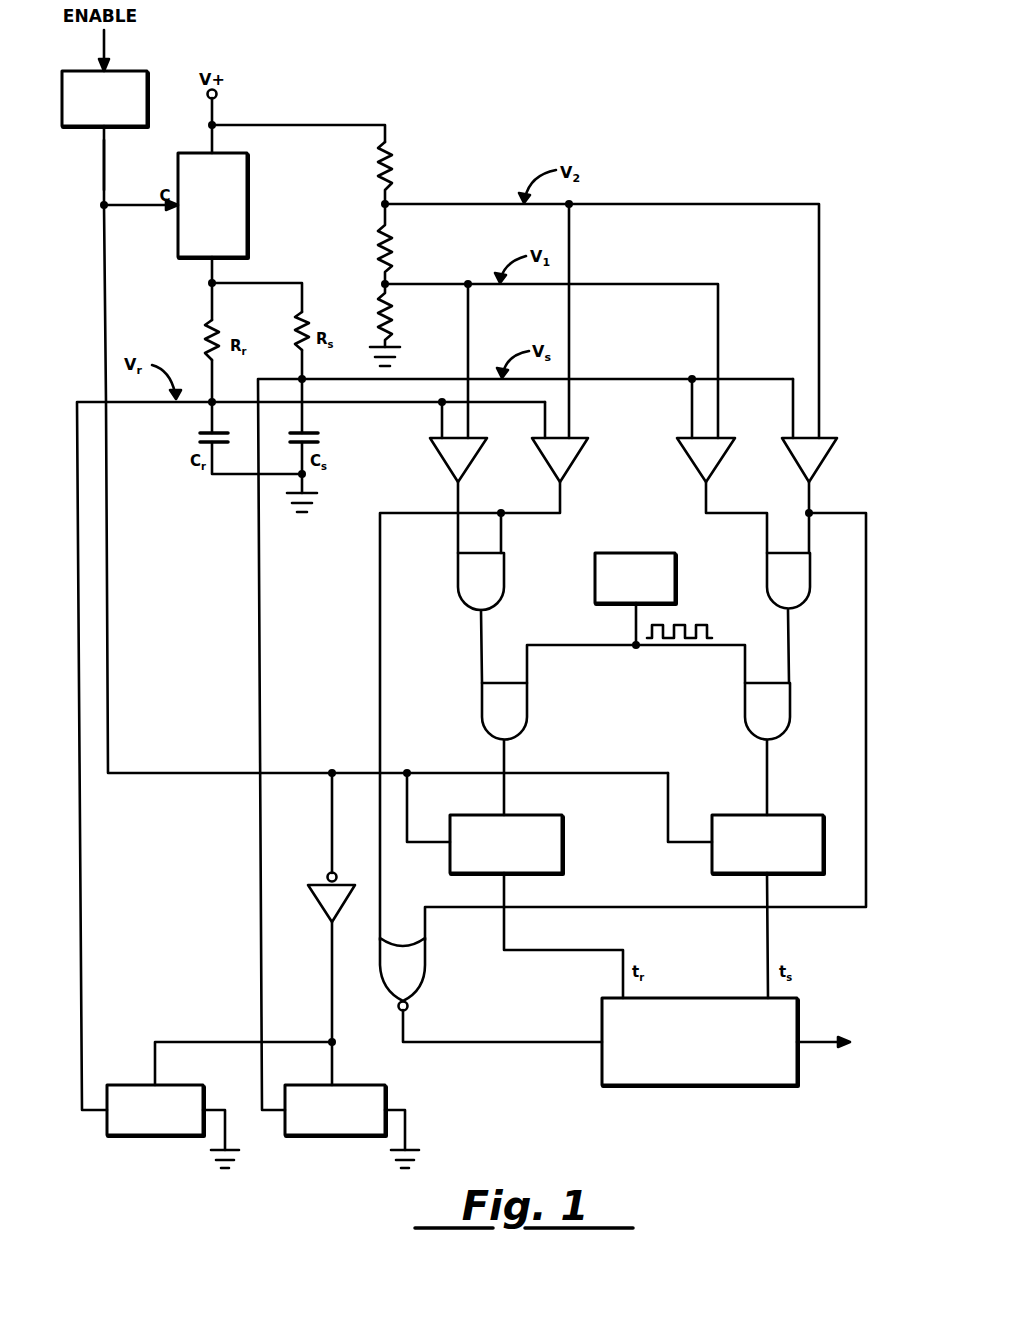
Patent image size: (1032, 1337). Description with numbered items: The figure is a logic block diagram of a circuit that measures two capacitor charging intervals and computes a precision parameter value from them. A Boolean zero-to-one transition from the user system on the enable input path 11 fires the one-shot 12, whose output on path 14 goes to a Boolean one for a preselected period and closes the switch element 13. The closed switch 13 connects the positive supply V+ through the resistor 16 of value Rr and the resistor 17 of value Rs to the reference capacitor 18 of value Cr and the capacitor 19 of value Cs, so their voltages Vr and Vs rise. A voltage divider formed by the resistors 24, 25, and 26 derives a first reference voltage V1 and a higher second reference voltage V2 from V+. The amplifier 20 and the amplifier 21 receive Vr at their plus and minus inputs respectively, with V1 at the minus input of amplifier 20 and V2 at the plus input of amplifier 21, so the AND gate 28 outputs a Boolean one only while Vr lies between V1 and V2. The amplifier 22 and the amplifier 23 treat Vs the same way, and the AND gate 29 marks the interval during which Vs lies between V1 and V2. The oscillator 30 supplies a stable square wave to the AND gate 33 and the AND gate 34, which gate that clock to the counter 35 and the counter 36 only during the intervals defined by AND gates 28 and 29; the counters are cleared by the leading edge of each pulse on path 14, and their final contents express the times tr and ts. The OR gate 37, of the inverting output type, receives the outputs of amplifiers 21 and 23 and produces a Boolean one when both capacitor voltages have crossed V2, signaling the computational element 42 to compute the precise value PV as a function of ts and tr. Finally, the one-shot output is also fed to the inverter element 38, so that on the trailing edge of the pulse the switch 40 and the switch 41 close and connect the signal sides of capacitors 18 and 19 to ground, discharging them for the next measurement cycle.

The enable input path 11 is at (102, 46).
The one-shot 12 is at (129, 70).
The switch element 13 is at (247, 200).
The path 14 is at (103, 166).
The resistor 16 is at (206, 346).
The resistor 17 is at (298, 336).
The reference capacitor 18 is at (200, 437).
The capacitor 19 is at (318, 437).
The amplifier 20 is at (448, 462).
The amplifier 21 is at (550, 462).
The amplifier 22 is at (696, 462).
The amplifier 23 is at (800, 462).
The resistor 24 is at (381, 172).
The resistor 25 is at (381, 253).
The resistor 26 is at (381, 320).
The AND gate 28 is at (458, 573).
The AND gate 29 is at (767, 573).
The oscillator 30 is at (650, 552).
The AND gate 33 is at (482, 712).
The AND gate 34 is at (745, 712).
The counter 35 is at (478, 814).
The counter 36 is at (740, 814).
The OR gate 37 is at (425, 967).
The inverter element 38 is at (320, 910).
The switch 40 is at (160, 1138).
The switch 41 is at (332, 1138).
The computational element 42 is at (710, 1086).